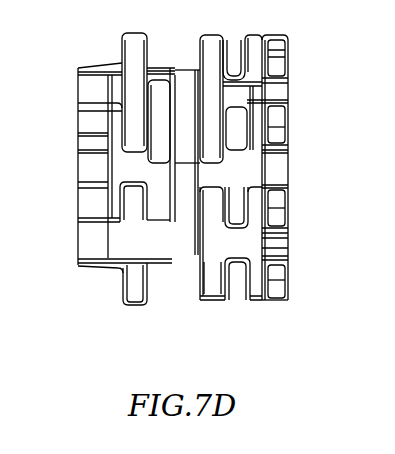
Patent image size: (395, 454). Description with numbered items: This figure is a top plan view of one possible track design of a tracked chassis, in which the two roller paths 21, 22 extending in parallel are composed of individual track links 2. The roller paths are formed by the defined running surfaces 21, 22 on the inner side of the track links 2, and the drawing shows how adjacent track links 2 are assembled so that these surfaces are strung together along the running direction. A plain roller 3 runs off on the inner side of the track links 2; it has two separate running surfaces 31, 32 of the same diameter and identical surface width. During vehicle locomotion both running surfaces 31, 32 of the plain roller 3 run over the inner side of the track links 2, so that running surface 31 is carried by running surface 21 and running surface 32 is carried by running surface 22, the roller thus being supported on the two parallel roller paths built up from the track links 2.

The track link 2 is at (103, 250).
The running surface 21 is at (212, 281).
The running surface 22 is at (128, 277).
The plain roller 3 is at (182, 147).
The running surface 31 is at (212, 103).
The running surface 32 is at (157, 95).